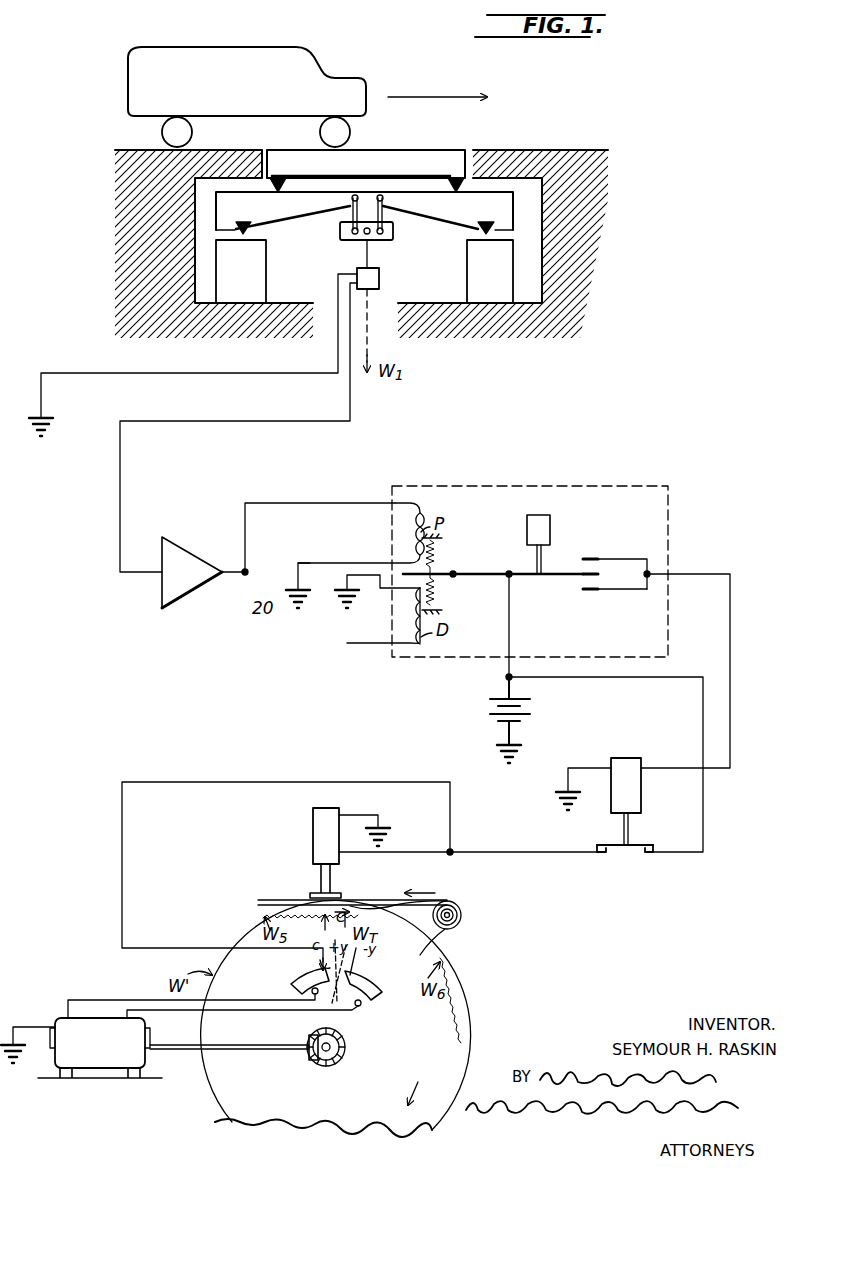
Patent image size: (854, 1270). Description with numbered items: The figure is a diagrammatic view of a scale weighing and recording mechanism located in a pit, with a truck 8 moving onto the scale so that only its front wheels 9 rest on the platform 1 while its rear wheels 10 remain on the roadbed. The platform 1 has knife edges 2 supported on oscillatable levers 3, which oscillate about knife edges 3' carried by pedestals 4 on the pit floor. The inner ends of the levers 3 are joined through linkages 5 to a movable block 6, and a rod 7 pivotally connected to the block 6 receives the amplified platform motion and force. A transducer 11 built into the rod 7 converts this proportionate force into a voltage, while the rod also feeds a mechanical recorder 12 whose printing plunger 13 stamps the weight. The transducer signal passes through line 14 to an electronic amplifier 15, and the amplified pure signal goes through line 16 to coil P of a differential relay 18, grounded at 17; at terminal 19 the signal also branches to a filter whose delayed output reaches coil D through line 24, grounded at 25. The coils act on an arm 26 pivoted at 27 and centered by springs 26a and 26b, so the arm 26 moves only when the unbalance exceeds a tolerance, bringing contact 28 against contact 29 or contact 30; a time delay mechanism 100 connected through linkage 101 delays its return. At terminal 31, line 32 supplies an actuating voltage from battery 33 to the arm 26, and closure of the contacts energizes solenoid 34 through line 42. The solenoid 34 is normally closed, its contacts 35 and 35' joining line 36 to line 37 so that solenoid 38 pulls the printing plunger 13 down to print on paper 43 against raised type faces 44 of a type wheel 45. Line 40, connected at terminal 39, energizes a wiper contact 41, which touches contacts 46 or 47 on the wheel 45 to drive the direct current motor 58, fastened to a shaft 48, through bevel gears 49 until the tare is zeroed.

The platform 1 is at (400, 158).
The knife edges 2 is at (283, 184).
The oscillatable levers 3 is at (357, 227).
The knife edges 3' is at (364, 234).
The pedestals 4 is at (260, 276).
The linkages 5 is at (350, 216).
The movable block 6 is at (342, 239).
The rod 7 is at (363, 258).
The truck 8 is at (298, 62).
The wheels 9 is at (342, 132).
The front wheel 10 is at (184, 132).
The transducer 11 is at (380, 280).
The mechanical recorder 12 is at (235, 870).
The printing plunger 13 is at (320, 890).
The line 14 is at (251, 404).
The electronic amplifier 15 is at (192, 562).
The line 16 is at (236, 582).
The ground 17 is at (340, 563).
The differential relay 18 is at (644, 486).
The terminal 19 is at (246, 571).
The line 24 is at (365, 640).
The ground 25 is at (346, 584).
The arm 26 is at (436, 566).
The spring 26a is at (440, 545).
The spring 26b is at (440, 606).
The pivot 27 is at (436, 582).
The contact 28 is at (597, 575).
The contact 29 is at (590, 558).
The contact 30 is at (592, 590).
The terminal 31 is at (511, 580).
The line 32 is at (506, 630).
The battery 33 is at (497, 698).
The solenoid 34 is at (645, 750).
The contact 35 is at (588, 837).
The contact 35' is at (667, 837).
The line 36 is at (608, 680).
The line 37 is at (553, 853).
The solenoid 38 is at (318, 835).
The terminal 39 is at (452, 851).
The electrical line 40 is at (124, 882).
The wiper contact 41 is at (322, 958).
The line 42 is at (707, 578).
The paper 43 is at (461, 915).
The raised type faces 44 is at (404, 920).
The type wheel 45 is at (443, 1037).
The electrical contact 46 is at (292, 982).
The electrical contact 47 is at (372, 1006).
The shaft 48 is at (272, 1052).
The bevel gears 49 is at (330, 1065).
The direct current motor 58 is at (62, 1018).
The time delay mechanism 100 is at (546, 530).
The linkage 101 is at (546, 563).